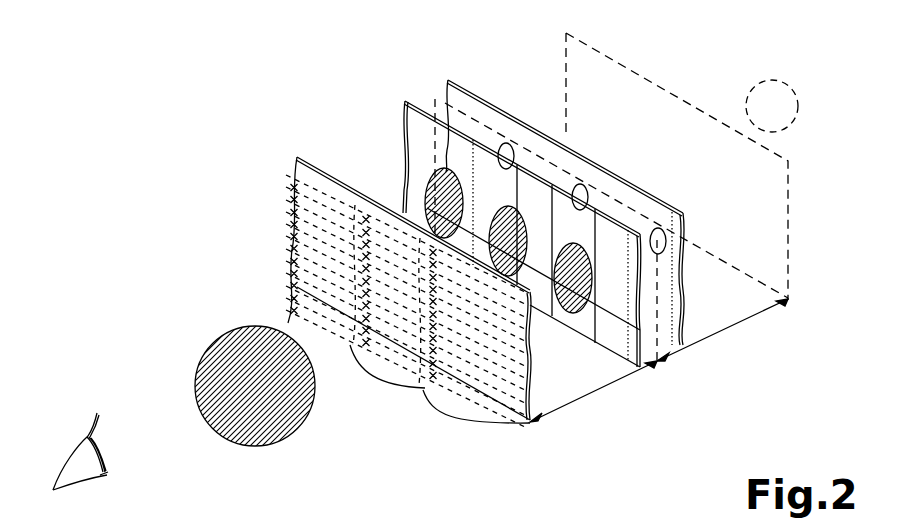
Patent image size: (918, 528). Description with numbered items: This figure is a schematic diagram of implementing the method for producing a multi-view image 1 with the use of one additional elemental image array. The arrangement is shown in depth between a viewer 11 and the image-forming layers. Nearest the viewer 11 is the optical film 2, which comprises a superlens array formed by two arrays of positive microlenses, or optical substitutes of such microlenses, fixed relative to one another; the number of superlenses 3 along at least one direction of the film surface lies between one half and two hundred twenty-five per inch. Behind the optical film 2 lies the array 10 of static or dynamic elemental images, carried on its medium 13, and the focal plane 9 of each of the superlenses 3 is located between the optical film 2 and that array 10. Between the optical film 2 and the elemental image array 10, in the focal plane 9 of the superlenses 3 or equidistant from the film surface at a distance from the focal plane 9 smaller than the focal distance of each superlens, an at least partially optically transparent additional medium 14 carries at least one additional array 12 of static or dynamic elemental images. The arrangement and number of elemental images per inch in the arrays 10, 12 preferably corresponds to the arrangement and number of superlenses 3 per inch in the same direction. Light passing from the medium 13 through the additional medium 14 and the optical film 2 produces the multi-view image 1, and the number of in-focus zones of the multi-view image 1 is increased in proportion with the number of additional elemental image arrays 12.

The multi-view image 1 is at (207, 345).
The optical film 2 is at (533, 423).
The superlenses 3 is at (382, 384).
The focal plane 9 is at (660, 287).
The array of static or dynamic elemental images 10 is at (435, 100).
The viewer 11 is at (77, 428).
The additional array of static or dynamic elemental images 12 is at (428, 186).
The medium of elemental image array 13 is at (683, 340).
The optically transparent additional medium 14 is at (652, 360).